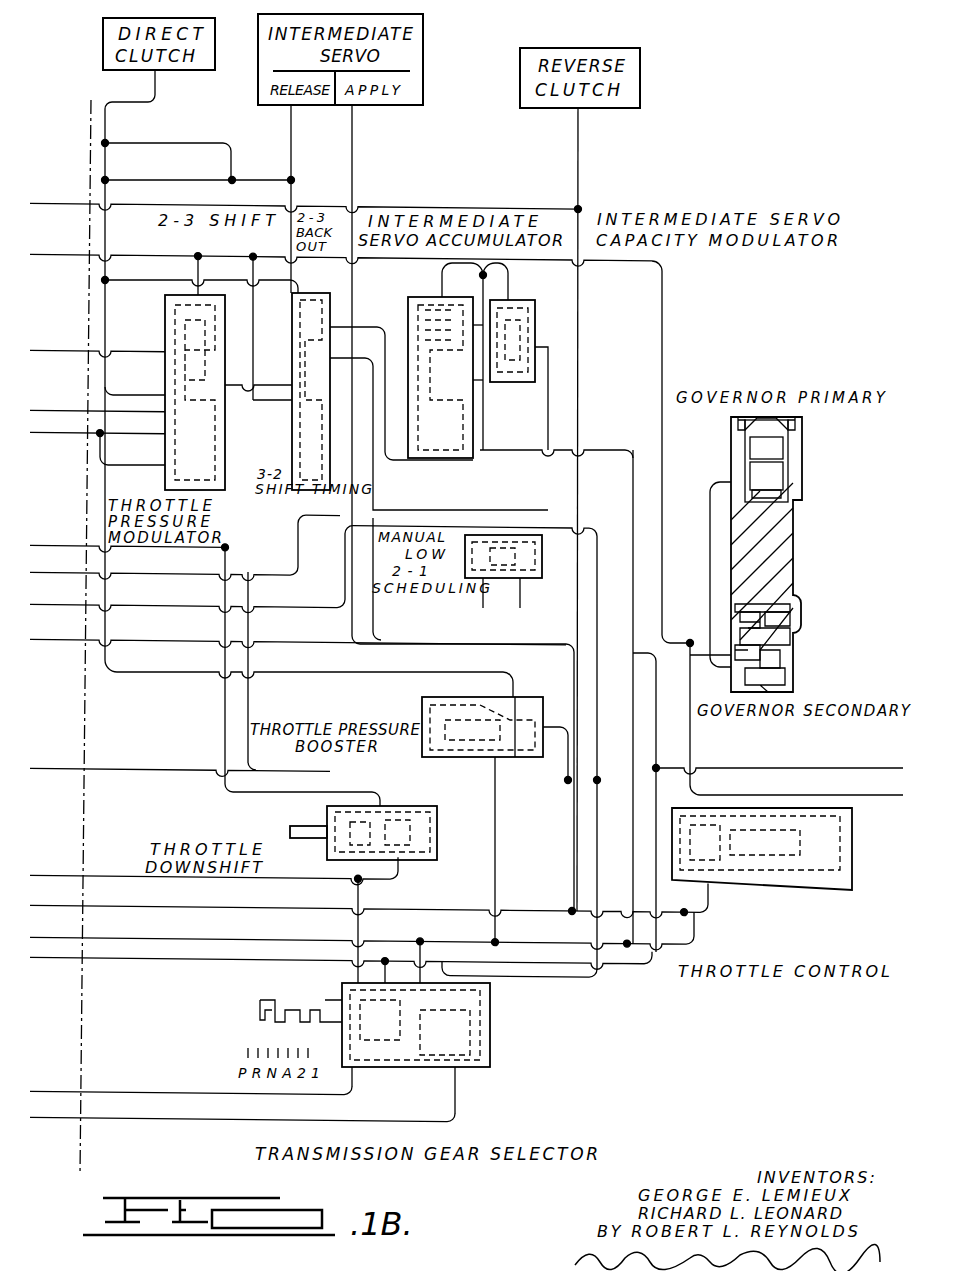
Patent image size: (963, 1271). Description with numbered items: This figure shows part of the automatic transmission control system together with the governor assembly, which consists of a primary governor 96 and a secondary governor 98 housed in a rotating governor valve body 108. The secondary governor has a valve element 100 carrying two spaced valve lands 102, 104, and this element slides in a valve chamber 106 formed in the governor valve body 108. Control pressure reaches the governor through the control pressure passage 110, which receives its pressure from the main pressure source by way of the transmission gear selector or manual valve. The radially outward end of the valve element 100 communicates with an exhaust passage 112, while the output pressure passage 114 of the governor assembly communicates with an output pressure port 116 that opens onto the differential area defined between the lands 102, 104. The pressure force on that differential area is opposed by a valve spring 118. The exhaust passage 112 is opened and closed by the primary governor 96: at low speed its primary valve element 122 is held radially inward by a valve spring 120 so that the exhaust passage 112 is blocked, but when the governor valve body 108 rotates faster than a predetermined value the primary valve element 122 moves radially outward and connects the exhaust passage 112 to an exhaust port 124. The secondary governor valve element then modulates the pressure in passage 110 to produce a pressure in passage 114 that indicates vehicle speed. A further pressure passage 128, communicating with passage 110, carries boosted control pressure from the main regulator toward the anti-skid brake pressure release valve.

The primary governor 96 is at (729, 452).
The secondary governor 98 is at (798, 673).
The valve element 100 is at (782, 640).
The valve land 102 is at (740, 616).
The valve land 104 is at (770, 686).
The valve chamber 106 is at (775, 656).
The governor valve body 108 is at (797, 610).
The control pressure passage 110 is at (662, 782).
The exhaust passage 112 is at (712, 520).
The output pressure passage 114 is at (692, 737).
The output pressure port 116 is at (738, 648).
The valve spring 118 is at (782, 606).
The valve spring 120 is at (742, 424).
The primary valve element 122 is at (752, 470).
The exhaust port 124 is at (745, 440).
The pressure passage 128 is at (841, 766).